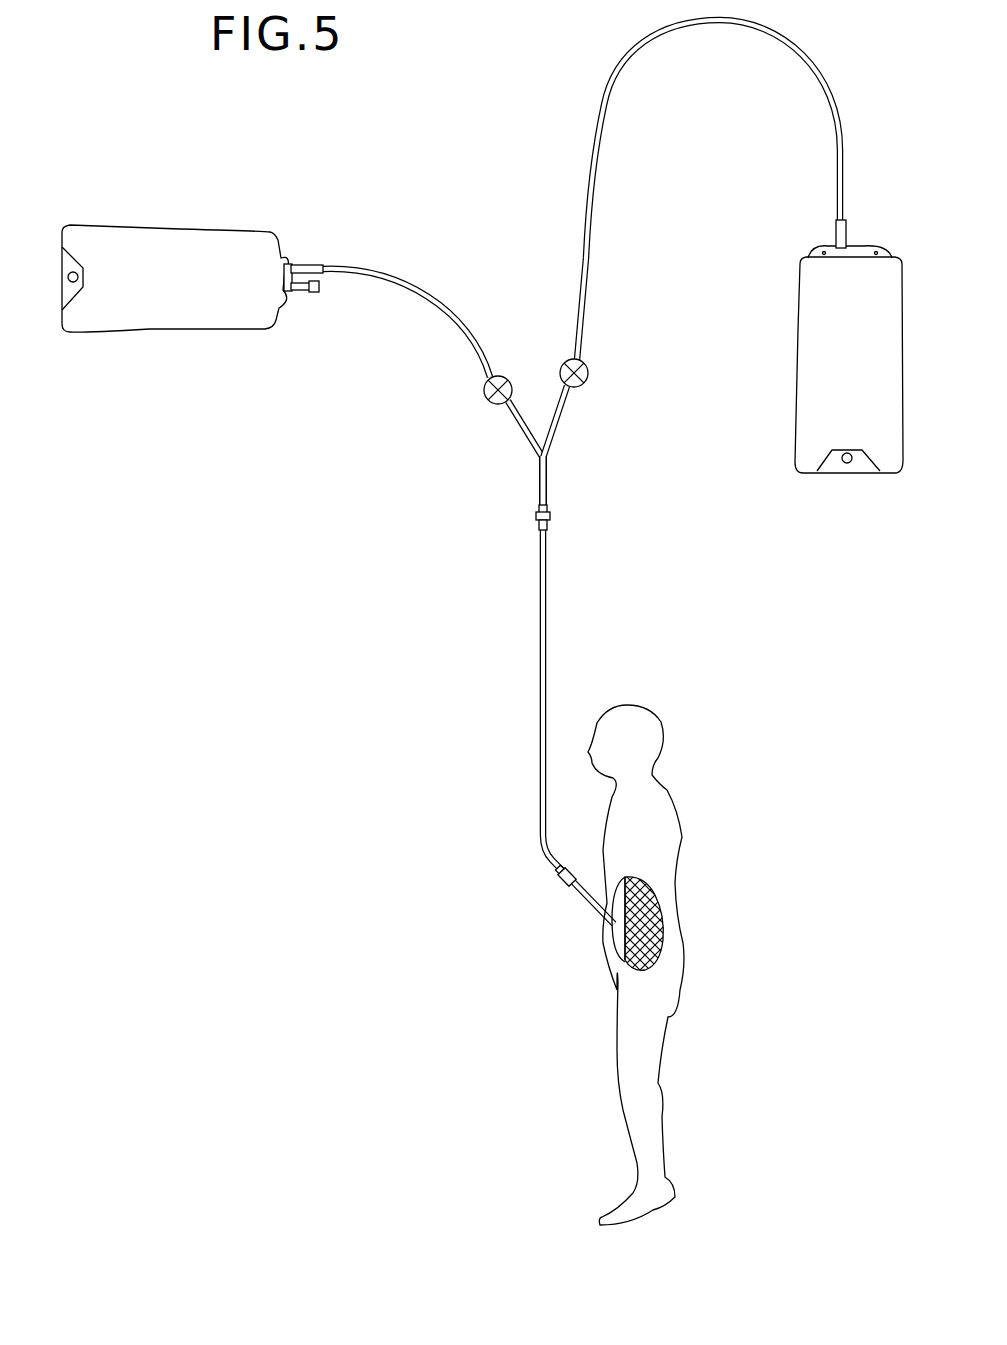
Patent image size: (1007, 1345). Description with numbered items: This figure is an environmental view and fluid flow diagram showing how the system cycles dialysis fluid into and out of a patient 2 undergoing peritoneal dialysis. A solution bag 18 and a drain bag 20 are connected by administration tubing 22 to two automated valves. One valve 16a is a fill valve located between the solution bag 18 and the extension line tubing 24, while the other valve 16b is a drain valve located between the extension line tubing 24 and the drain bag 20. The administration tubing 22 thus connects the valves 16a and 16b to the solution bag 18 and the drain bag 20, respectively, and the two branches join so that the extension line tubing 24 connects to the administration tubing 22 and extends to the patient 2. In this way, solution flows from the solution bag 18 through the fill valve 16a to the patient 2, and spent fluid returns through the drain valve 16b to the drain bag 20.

The patient 2 is at (592, 964).
The fill valve 16a is at (488, 404).
The drain valve 16b is at (582, 390).
The solution bag 18 is at (168, 330).
The drain bag 20 is at (800, 315).
The administration tubing 22 is at (440, 303).
The extension line tubing 24 is at (540, 628).